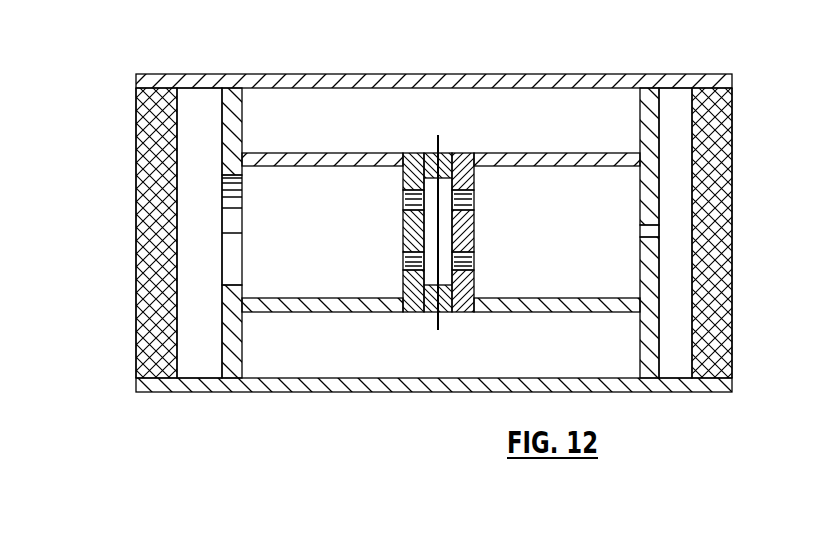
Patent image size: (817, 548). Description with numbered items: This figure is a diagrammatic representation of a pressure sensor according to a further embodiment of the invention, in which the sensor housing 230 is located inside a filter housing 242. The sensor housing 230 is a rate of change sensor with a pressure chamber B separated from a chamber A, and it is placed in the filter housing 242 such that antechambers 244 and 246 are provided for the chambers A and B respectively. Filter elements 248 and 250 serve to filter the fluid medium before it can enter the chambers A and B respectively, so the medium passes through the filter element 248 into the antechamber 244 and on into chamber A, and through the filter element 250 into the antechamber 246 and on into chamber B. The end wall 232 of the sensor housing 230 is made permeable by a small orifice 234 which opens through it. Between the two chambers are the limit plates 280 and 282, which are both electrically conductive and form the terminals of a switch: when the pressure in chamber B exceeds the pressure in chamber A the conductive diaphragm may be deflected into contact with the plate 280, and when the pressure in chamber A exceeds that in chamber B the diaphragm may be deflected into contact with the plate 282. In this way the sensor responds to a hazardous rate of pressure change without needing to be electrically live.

The housing 230 is at (376, 135).
The end wall 232 is at (643, 272).
The orifice 234 is at (640, 232).
The filter housing 242 is at (578, 80).
The antechamber 244 is at (206, 95).
The antechamber 246 is at (679, 98).
The filter element 248 is at (144, 130).
The filter element 250 is at (727, 325).
The limit plate 280 is at (405, 283).
The limit plate 282 is at (475, 240).